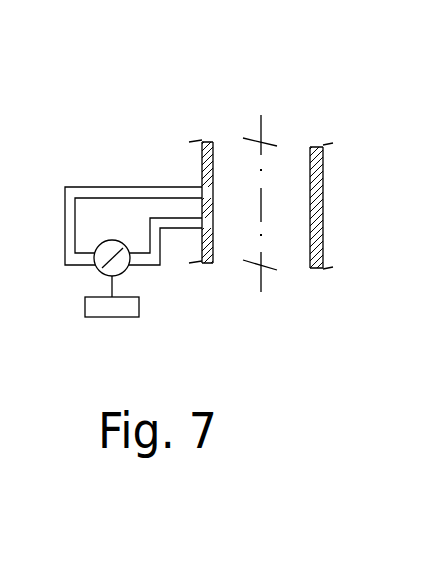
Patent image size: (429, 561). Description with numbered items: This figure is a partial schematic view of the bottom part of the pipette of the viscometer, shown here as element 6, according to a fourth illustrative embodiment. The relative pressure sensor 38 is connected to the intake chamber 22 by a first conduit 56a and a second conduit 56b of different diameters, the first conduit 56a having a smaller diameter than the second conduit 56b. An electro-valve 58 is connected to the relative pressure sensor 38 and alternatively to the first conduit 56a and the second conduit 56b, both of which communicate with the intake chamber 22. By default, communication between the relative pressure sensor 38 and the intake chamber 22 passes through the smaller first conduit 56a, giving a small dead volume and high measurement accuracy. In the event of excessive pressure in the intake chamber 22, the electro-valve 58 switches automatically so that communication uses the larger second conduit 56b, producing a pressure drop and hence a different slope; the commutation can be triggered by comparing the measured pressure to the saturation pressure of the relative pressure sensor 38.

The vehicle body panel / wall 6 is at (340, 150).
The intake chamber 22 is at (298, 198).
The first conduit 56a is at (177, 230).
The second conduit 56b is at (150, 192).
The electro-valve 58 is at (93, 269).
The relative pressure sensor 38 is at (110, 318).